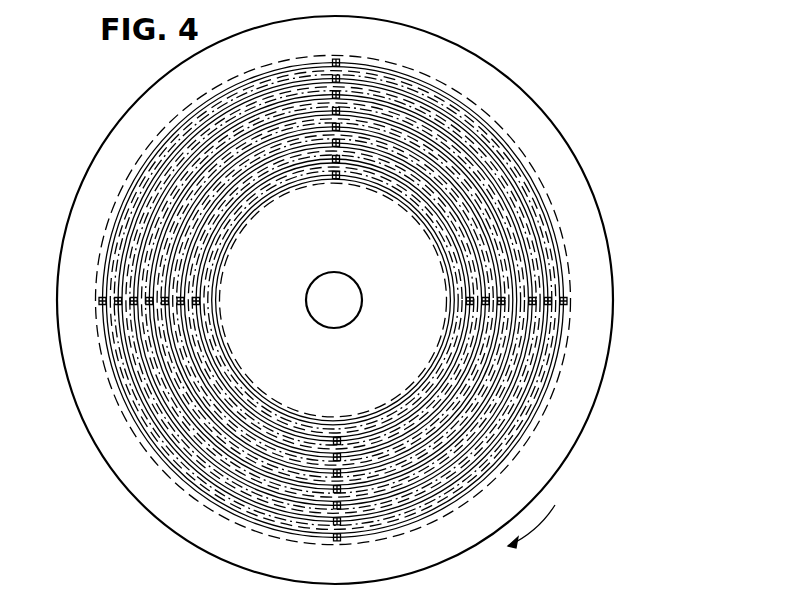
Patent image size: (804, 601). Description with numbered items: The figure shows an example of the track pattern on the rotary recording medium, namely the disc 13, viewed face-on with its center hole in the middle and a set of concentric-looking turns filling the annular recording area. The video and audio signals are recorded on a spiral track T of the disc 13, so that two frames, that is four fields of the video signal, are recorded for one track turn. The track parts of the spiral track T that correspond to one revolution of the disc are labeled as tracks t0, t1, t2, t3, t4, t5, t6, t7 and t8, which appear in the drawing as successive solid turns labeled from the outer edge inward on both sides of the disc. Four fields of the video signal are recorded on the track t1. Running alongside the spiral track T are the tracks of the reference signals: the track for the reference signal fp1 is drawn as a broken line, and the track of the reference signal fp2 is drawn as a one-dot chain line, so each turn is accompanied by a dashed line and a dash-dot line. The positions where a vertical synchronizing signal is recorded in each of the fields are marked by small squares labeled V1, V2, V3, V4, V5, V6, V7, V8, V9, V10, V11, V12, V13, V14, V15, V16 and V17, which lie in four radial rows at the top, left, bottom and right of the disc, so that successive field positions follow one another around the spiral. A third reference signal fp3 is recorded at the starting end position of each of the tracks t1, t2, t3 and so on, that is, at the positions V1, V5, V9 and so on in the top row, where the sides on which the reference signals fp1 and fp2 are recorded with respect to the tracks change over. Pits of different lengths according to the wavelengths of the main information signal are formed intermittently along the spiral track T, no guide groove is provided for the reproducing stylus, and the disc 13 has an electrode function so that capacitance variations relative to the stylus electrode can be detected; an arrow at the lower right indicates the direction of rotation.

The disc 13 is at (577, 150).
The spiral track T is at (195, 108).
The track t0 is at (458, 95).
The track t1 is at (257, 74).
The track t2 is at (294, 80).
The track t3 is at (245, 115).
The track t4 is at (217, 167).
The track t5 is at (244, 176).
The track t6 is at (240, 195).
The track t7 is at (222, 222).
The track t8 is at (303, 184).
The reference signal fp1 is at (115, 203).
The reference signal fp2 is at (120, 232).
The third reference signal fp3 is at (334, 57).
The vertical synchronizing signal position V1 is at (338, 60).
The vertical synchronizing signal position V2 is at (101, 302).
The vertical synchronizing signal position V3 is at (337, 540).
The vertical synchronizing signal position V4 is at (566, 301).
The vertical synchronizing signal position V5 is at (339, 78).
The vertical synchronizing signal position V6 is at (117, 303).
The vertical synchronizing signal position V7 is at (336, 523).
The vertical synchronizing signal position V8 is at (549, 304).
The vertical synchronizing signal position V9 is at (339, 94).
The vertical synchronizing signal position V10 is at (132, 297).
The vertical synchronizing signal position V11 is at (339, 508).
The vertical synchronizing signal position V12 is at (534, 298).
The vertical synchronizing signal position V13 is at (336, 114).
The vertical synchronizing signal position V14 is at (148, 304).
The vertical synchronizing signal position V15 is at (336, 455).
The vertical synchronizing signal position V16 is at (500, 298).
The vertical synchronizing signal position V17 is at (339, 126).